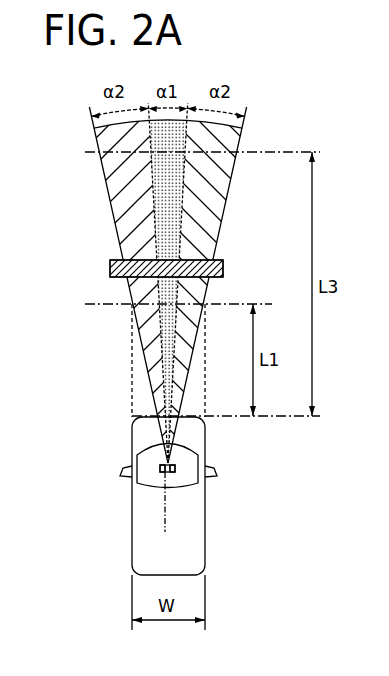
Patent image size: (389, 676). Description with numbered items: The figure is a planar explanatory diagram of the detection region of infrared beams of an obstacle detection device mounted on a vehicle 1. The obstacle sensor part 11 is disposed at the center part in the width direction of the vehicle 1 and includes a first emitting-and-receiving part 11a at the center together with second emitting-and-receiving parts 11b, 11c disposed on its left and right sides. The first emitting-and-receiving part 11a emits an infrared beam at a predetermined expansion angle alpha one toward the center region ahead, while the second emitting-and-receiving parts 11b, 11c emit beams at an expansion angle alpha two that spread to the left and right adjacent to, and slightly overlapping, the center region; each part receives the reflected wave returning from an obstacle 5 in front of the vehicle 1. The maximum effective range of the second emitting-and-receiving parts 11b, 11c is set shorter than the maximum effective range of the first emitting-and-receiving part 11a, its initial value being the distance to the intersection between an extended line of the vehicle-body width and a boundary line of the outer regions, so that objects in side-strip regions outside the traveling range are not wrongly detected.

The vehicle 1 is at (213, 542).
The obstacle 5 is at (223, 268).
The obstacle sensor part 11 is at (178, 464).
The first emitting-and-receiving part 11a is at (165, 532).
The second emitting-and-receiving part 11b is at (161, 472).
The second emitting-and-receiving part 11c is at (175, 471).